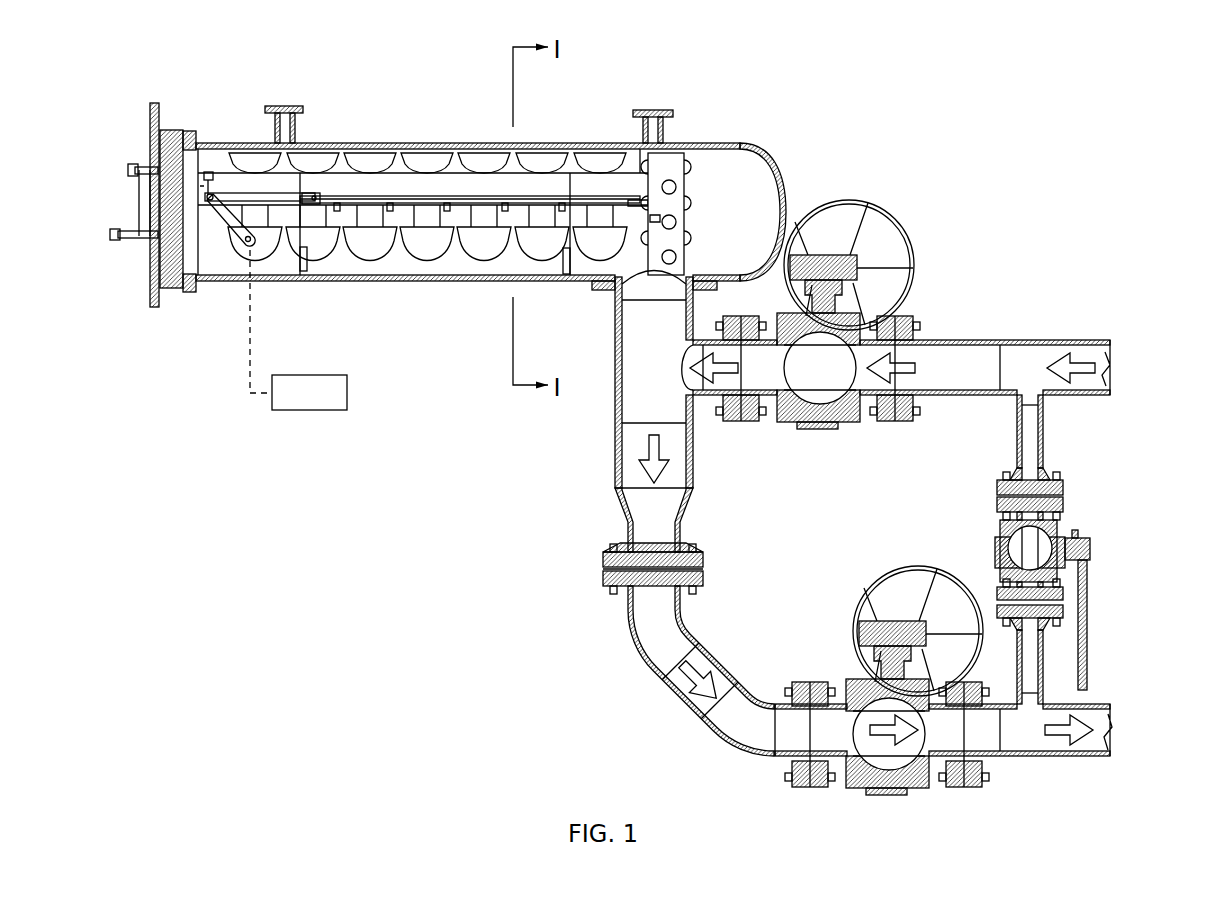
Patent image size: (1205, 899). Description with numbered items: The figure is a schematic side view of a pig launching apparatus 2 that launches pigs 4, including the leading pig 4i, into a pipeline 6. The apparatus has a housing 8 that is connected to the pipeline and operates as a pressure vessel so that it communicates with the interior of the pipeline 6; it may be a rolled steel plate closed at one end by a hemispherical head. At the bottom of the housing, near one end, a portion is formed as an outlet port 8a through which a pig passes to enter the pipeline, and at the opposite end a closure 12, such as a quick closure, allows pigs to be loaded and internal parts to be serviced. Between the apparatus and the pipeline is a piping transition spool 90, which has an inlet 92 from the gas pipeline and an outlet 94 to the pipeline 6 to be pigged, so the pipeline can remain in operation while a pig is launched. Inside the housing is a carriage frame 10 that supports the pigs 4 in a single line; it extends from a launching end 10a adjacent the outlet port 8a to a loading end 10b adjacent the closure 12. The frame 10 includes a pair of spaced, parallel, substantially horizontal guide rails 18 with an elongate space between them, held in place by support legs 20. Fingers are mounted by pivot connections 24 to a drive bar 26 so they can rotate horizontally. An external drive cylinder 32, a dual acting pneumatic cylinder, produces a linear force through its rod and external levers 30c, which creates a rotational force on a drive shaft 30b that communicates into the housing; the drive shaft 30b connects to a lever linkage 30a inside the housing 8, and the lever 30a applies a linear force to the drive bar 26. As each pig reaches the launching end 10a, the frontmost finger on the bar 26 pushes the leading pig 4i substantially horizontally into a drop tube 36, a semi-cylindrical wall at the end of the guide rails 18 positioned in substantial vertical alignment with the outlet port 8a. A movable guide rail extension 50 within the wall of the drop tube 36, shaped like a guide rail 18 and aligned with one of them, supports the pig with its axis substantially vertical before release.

The pig launching apparatus 2 is at (127, 90).
The pigs 4 is at (249, 151).
The leading pig 4i is at (594, 151).
The pipeline 6 is at (1113, 735).
The housing 8 is at (708, 143).
The outlet port 8a is at (612, 289).
The carriage frame 10 is at (231, 185).
The launching end 10a is at (636, 188).
The loading end 10b is at (202, 186).
The closure 12 is at (160, 163).
The guide rails 18 is at (631, 165).
The support legs 20 is at (298, 270).
The pivot connection 24 is at (562, 213).
The drive bar 26 is at (461, 195).
The lever linkage 30a is at (219, 222).
The drive shaft 30b is at (246, 248).
The external levers 30c is at (248, 384).
The drive cylinder 32 is at (297, 405).
The drop tube 36 is at (684, 187).
The guide rail extension 50 is at (652, 222).
The piping transition spool 90 is at (741, 424).
The inlet 92 is at (964, 340).
The outlet 94 is at (687, 624).